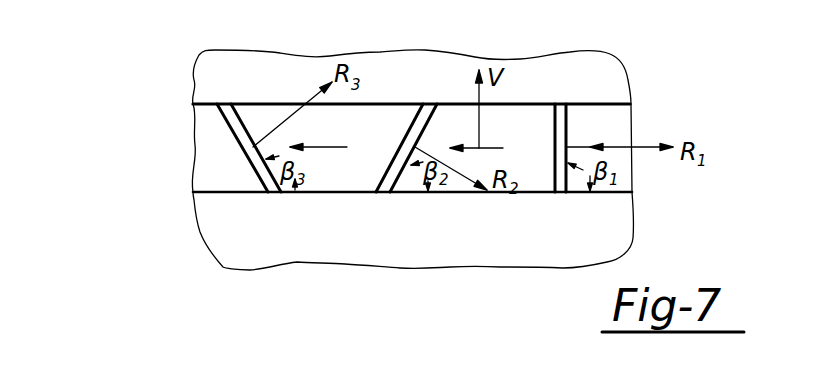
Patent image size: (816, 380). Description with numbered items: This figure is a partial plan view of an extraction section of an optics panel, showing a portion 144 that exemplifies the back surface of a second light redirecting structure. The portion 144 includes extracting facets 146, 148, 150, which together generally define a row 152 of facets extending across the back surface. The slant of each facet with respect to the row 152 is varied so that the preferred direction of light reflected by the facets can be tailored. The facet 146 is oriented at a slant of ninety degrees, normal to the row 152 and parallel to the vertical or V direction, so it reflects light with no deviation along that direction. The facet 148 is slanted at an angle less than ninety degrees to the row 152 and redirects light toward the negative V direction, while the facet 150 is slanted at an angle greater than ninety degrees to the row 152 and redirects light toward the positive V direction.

The portion of a back surface of a second light redirecting structure 144 is at (619, 52).
The extracting facet 146 is at (554, 162).
The extracting facet 148 is at (395, 155).
The extracting facet 150 is at (255, 158).
The row of facets 152 is at (362, 103).